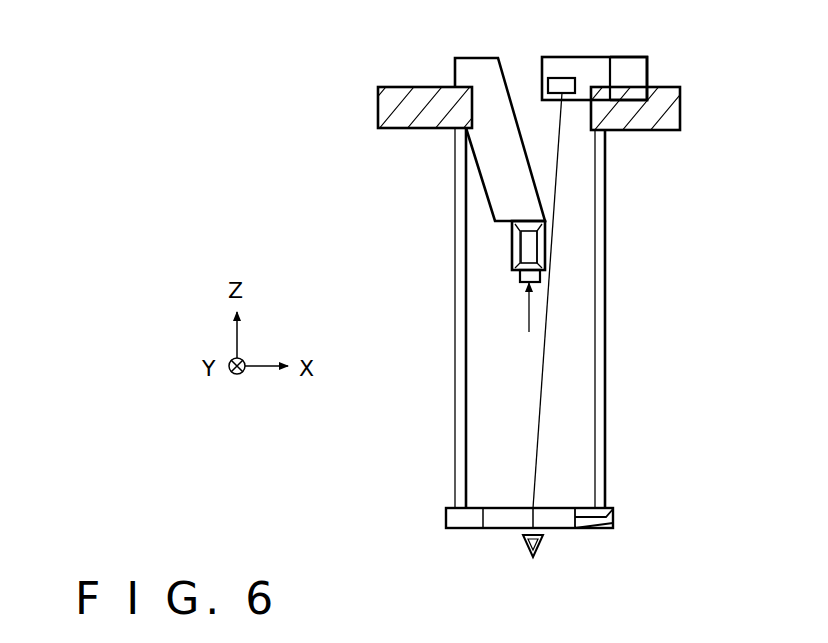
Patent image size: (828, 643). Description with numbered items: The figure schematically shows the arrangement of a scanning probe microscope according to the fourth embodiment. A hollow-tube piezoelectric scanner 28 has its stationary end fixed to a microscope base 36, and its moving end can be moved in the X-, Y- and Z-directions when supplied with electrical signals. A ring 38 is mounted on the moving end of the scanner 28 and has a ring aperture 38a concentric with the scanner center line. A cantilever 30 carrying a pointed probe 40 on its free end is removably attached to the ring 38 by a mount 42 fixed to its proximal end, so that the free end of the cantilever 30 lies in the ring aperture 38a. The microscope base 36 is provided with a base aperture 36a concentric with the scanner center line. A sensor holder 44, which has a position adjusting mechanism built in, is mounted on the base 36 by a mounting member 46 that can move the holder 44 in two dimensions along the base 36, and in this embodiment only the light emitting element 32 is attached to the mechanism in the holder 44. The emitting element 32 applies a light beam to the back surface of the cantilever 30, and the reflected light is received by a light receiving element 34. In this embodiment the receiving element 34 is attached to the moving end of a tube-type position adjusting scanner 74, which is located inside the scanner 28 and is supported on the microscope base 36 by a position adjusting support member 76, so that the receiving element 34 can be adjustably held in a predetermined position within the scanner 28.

The scanner 28 is at (606, 386).
The cantilever 30 is at (558, 546).
The light emitting element 32 is at (562, 78).
The light receiving element 34 is at (522, 284).
The microscope base 36 is at (386, 110).
The base aperture 36a is at (574, 129).
The ring 38 is at (448, 521).
The ring aperture 38a is at (508, 512).
The pointed probe 40 is at (531, 556).
The mount 42 is at (612, 512).
The sensor holder 44 is at (602, 57).
The mounting member 46 is at (648, 68).
The position adjusting scanner 74 is at (512, 253).
The position adjusting support member 76 is at (480, 178).